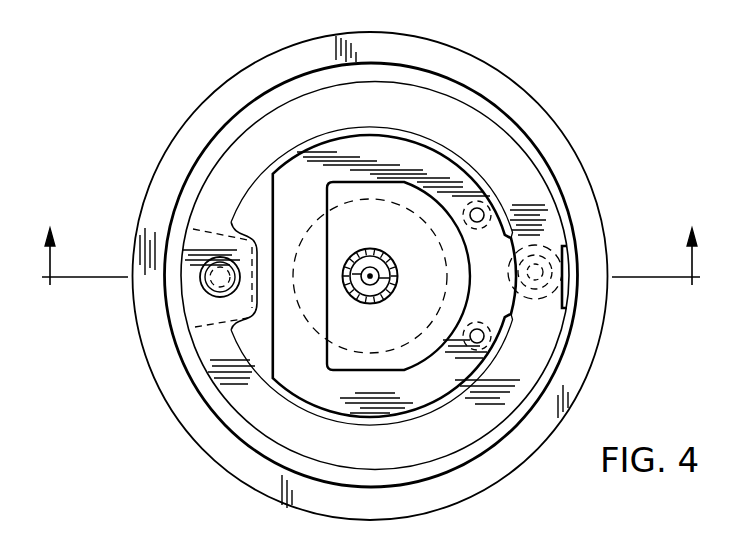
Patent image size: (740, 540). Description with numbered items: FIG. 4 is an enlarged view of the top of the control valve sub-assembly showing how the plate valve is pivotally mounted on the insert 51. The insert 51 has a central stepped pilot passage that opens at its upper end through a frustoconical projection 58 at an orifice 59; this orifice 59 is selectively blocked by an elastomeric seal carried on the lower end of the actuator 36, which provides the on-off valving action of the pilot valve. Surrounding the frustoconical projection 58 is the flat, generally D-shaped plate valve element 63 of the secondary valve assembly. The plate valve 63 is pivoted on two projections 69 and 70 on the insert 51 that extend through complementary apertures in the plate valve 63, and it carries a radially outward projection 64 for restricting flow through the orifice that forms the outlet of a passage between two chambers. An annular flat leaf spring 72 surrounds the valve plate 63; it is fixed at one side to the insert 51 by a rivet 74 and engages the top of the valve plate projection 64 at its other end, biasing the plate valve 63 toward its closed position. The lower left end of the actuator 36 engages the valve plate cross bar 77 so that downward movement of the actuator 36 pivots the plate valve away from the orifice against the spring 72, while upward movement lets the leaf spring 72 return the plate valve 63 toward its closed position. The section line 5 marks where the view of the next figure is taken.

The section line 5- 5 is at (371, 244).
The actuator 36 is at (312, 228).
The insert 51 is at (185, 400).
The frustoconical projection 58 is at (395, 274).
The orifice 59 is at (368, 263).
The plate valve element 63 is at (445, 173).
The radially outward projection 64 is at (568, 258).
The projection 69 is at (485, 341).
The projection 70 is at (485, 205).
The annular flat leaf spring 72 is at (310, 113).
The rivet 74 is at (205, 287).
The valve plate cross bar 77 is at (310, 258).